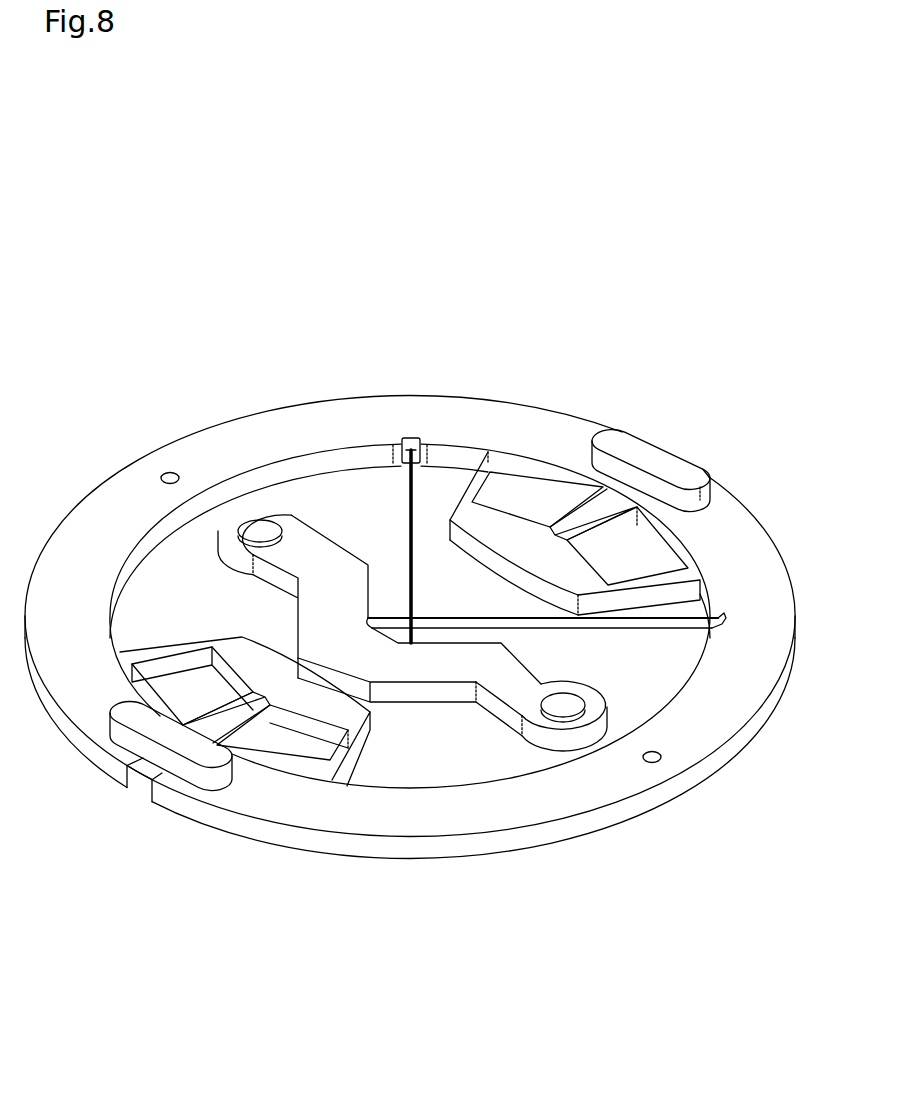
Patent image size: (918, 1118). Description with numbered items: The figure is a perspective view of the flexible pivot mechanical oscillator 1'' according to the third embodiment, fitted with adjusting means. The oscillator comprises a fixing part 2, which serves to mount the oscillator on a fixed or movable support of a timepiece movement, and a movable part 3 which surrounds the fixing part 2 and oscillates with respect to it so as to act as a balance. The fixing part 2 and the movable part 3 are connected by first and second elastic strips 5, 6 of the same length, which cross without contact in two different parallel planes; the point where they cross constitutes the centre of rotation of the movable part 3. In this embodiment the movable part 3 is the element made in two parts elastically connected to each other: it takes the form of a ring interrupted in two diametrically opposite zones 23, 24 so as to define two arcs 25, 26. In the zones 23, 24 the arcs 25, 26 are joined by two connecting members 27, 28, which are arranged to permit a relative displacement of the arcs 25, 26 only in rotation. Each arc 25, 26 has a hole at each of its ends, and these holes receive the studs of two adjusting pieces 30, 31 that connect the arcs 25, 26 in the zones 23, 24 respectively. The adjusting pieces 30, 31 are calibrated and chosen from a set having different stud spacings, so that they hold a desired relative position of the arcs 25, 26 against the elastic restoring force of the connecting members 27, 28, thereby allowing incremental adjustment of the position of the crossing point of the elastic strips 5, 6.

The flexible pivot mechanical oscillator 1'' is at (323, 545).
The fixing part 2 is at (424, 690).
The movable part 3 is at (452, 866).
The first elastic strip 5 is at (613, 628).
The second elastic strip 6 is at (406, 518).
The interruption zone 23 is at (692, 431).
The interruption zone 24 is at (126, 803).
The arc 25 is at (569, 837).
The arc 26 is at (345, 410).
The connecting member 27 is at (513, 569).
The connecting member 28 is at (220, 634).
The adjusting piece 30 is at (617, 437).
The adjusting piece 31 is at (193, 752).